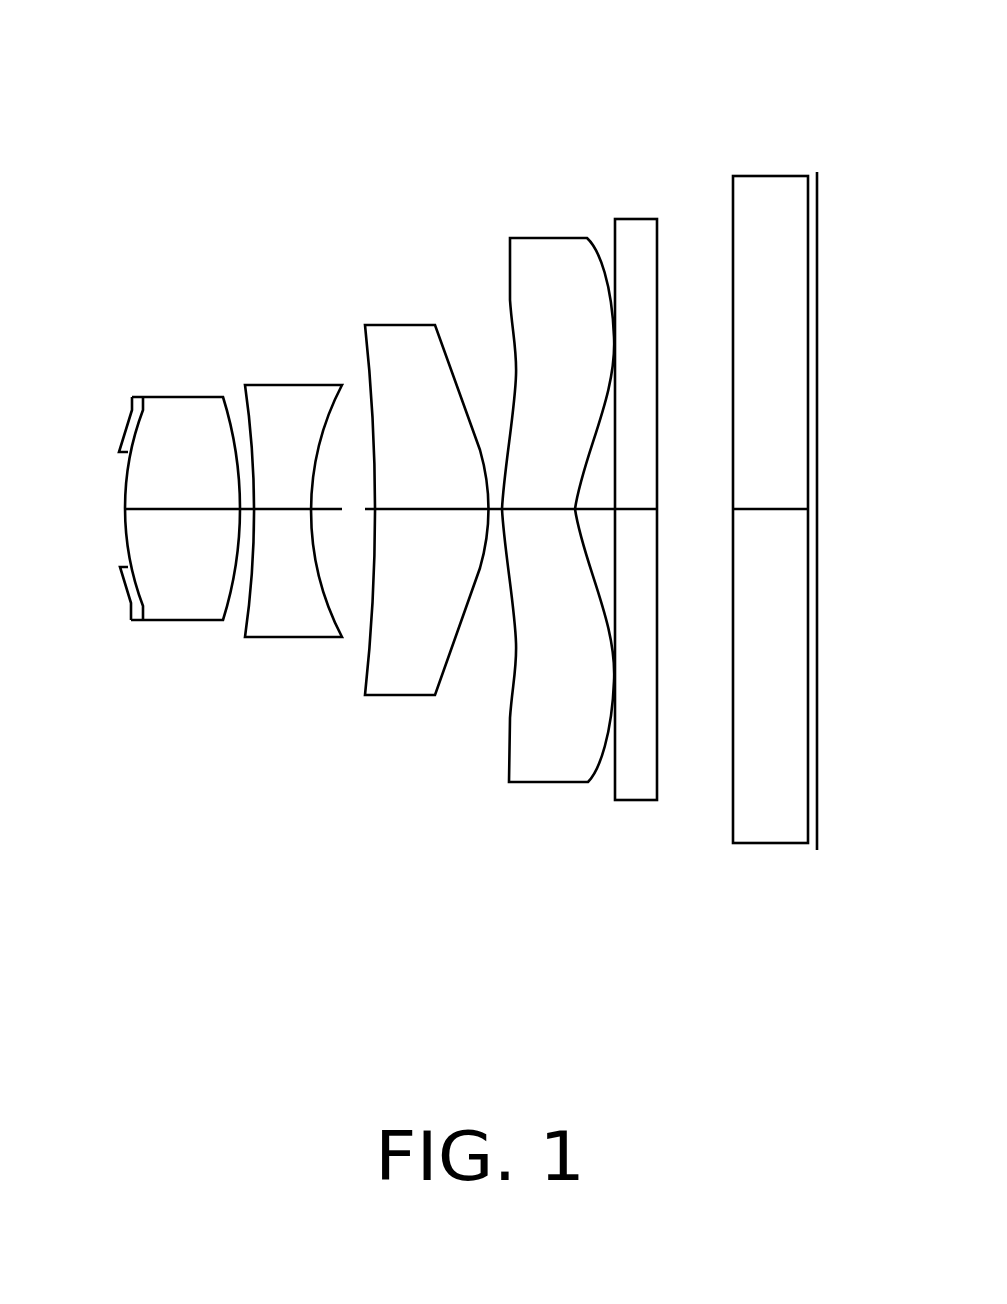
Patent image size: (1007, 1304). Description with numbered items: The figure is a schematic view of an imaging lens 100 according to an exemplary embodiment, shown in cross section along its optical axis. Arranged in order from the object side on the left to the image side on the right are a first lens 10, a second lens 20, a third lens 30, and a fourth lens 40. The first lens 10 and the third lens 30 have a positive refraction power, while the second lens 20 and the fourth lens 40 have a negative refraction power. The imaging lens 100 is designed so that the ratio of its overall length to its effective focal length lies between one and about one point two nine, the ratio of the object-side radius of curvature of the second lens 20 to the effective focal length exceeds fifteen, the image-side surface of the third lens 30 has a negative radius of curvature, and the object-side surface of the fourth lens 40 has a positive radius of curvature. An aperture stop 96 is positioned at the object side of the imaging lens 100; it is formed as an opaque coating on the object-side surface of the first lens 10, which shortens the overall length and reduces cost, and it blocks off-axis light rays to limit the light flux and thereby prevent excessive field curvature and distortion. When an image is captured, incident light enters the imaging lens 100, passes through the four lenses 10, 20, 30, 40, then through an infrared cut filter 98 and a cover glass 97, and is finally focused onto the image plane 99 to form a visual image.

The imaging lens 100 is at (290, 124).
The first lens 10 is at (171, 444).
The aperture stop 96 is at (128, 575).
The second lens 20 is at (290, 405).
The third lens 30 is at (407, 355).
The fourth lens 40 is at (542, 277).
The infrared cut filter 98 is at (638, 250).
The cover glass 97 is at (772, 223).
The image plane 99 is at (818, 195).